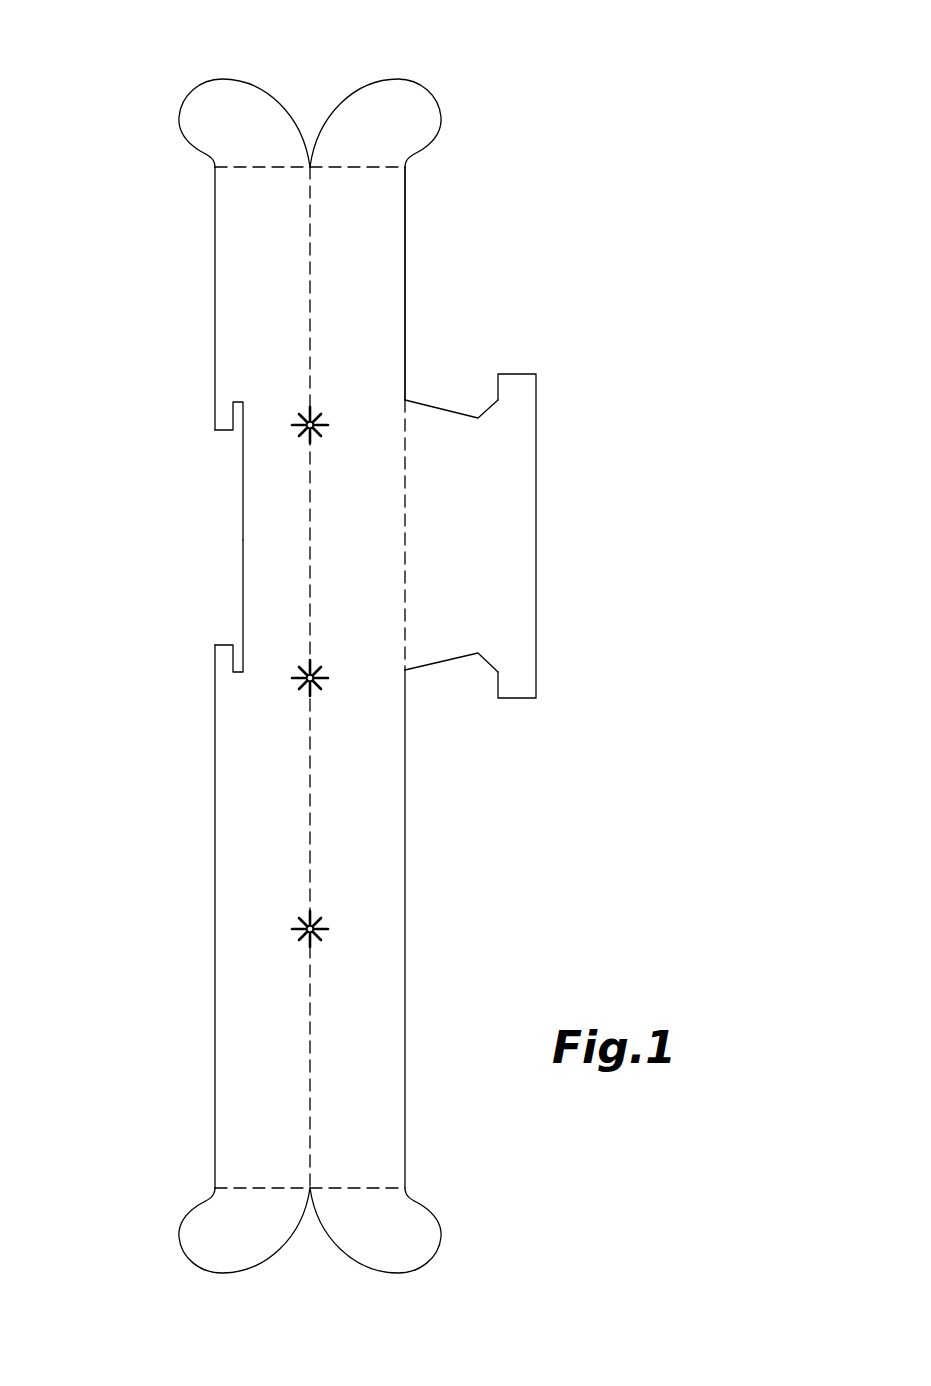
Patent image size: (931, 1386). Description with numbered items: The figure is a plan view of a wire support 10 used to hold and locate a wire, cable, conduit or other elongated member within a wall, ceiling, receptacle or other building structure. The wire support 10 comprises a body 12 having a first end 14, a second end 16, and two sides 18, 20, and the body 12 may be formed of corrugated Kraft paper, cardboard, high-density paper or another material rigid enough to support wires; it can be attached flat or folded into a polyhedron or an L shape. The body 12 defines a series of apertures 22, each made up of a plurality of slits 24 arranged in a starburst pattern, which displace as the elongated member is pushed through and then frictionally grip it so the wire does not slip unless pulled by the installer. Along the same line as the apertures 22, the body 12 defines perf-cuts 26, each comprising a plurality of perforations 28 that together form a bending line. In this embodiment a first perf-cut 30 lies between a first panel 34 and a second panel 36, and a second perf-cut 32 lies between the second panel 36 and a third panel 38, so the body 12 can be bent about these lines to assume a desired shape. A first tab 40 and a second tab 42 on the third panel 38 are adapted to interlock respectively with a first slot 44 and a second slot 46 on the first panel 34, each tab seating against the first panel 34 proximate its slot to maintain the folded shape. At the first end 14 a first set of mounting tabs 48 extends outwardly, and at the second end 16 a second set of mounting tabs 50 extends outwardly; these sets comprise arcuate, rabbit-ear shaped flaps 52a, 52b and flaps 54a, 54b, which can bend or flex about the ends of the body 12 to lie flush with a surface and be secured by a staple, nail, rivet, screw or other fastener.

The wire support 10 is at (518, 222).
The body 12 is at (432, 842).
The first end 14 is at (227, 167).
The second end 16 is at (227, 1187).
The side 18 is at (215, 873).
The side 20 is at (405, 898).
The aperture 22 is at (283, 402).
The slits 24 is at (315, 420).
The perf-cut 26 is at (427, 590).
The perforations 28 is at (405, 535).
The first perf-cut 30 is at (325, 1138).
The second perf-cut 32 is at (427, 638).
The first panel 34 is at (228, 910).
The second panel 36 is at (388, 918).
The third panel 38 is at (513, 455).
The first tab 40 is at (527, 363).
The second tab 42 is at (533, 712).
The first slot 44 is at (232, 442).
The second slot 46 is at (232, 633).
The first set of mounting tabs 48 is at (314, 88).
The second set of mounting tabs 50 is at (313, 1253).
The flap 52a is at (198, 98).
The flap 52b is at (418, 108).
The flap 54a is at (190, 1242).
The flap 54b is at (427, 1233).